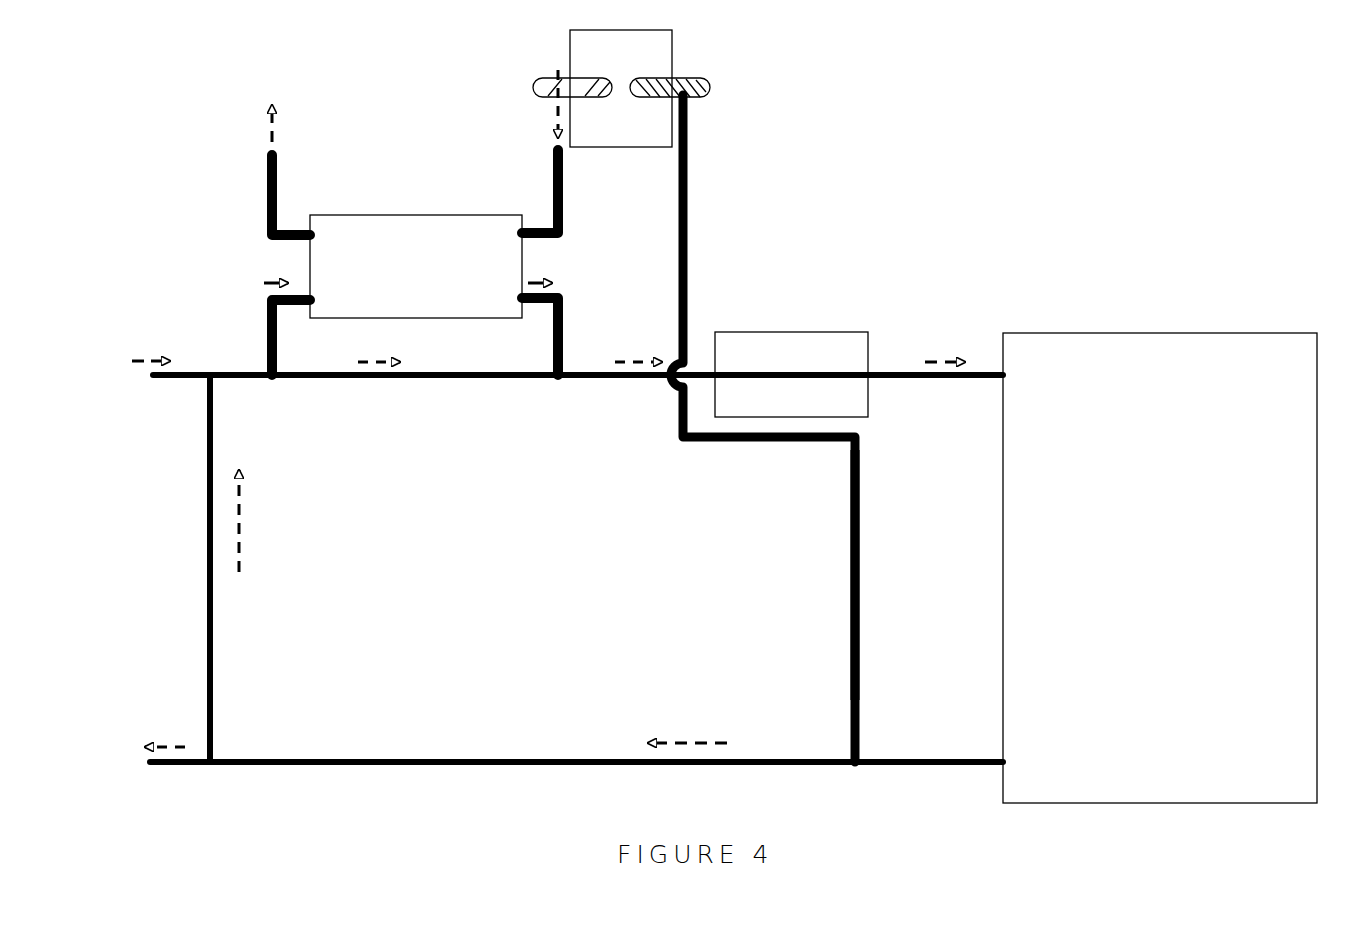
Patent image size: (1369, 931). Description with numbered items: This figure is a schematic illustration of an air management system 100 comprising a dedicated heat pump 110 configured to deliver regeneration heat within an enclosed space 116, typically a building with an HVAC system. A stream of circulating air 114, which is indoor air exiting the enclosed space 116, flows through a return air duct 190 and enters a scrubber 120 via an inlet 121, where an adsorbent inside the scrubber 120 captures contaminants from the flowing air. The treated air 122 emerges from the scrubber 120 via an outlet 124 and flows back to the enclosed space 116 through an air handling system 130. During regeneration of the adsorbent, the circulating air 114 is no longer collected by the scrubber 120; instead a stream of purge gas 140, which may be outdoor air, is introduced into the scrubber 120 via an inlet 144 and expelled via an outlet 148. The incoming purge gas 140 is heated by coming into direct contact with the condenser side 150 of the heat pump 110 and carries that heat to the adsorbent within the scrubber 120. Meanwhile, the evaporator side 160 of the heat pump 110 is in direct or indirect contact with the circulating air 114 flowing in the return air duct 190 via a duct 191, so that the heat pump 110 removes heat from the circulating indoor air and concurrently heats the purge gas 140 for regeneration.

The air management system 100 is at (1295, 158).
The heat pump 110 is at (632, 148).
The circulating air 114 is at (286, 280).
The enclosed space 116 is at (1077, 333).
The scrubber 120 is at (375, 215).
The inlet 121 is at (268, 331).
The treated air 122 is at (545, 268).
The outlet 124 is at (564, 366).
The air handling system 130 is at (805, 332).
The purge gas 140 is at (556, 108).
The inlet 144 is at (564, 233).
The outlet 148 is at (268, 194).
The condenser side 150 is at (533, 87).
The evaporator side 160 is at (690, 97).
The return air duct 190 is at (912, 760).
The duct 191 is at (855, 562).